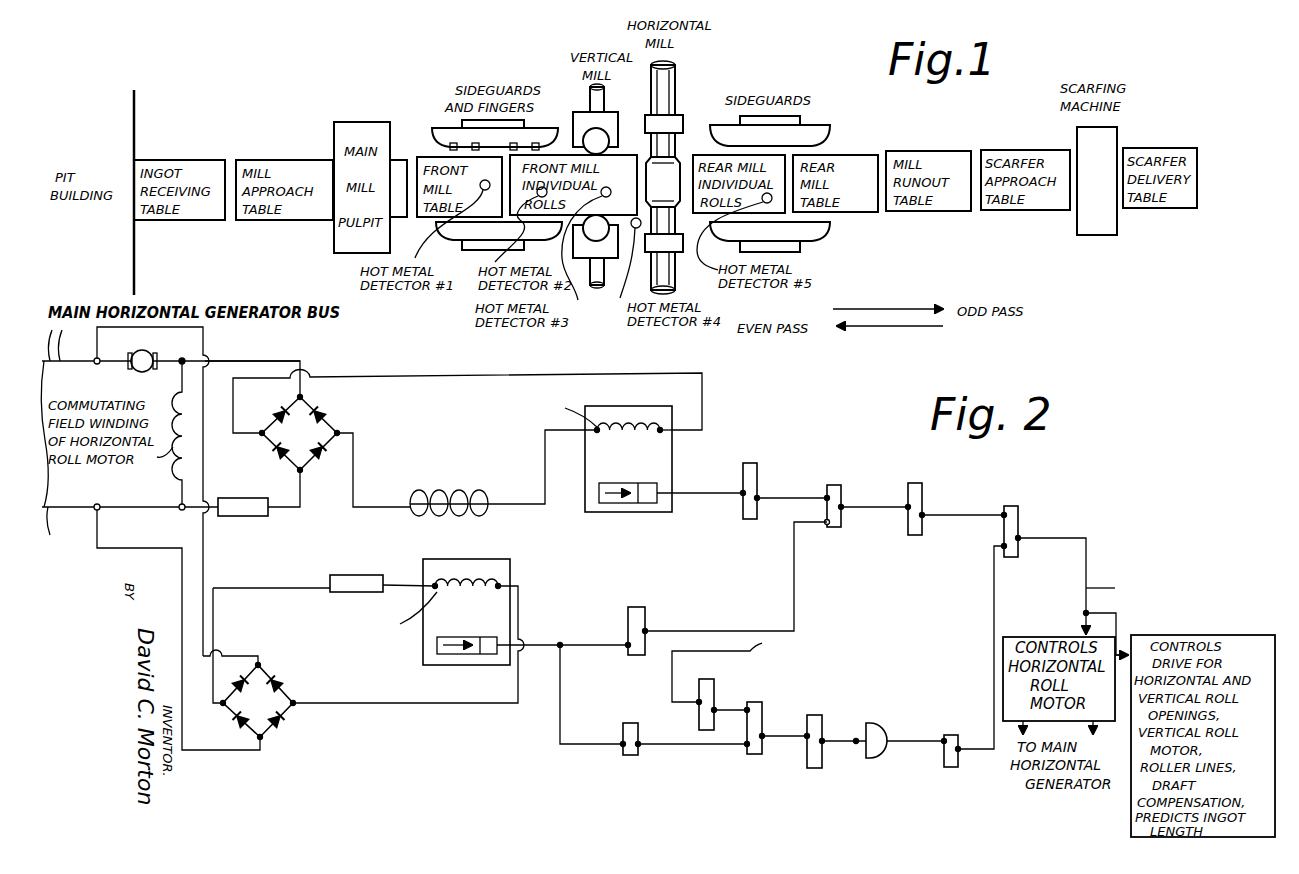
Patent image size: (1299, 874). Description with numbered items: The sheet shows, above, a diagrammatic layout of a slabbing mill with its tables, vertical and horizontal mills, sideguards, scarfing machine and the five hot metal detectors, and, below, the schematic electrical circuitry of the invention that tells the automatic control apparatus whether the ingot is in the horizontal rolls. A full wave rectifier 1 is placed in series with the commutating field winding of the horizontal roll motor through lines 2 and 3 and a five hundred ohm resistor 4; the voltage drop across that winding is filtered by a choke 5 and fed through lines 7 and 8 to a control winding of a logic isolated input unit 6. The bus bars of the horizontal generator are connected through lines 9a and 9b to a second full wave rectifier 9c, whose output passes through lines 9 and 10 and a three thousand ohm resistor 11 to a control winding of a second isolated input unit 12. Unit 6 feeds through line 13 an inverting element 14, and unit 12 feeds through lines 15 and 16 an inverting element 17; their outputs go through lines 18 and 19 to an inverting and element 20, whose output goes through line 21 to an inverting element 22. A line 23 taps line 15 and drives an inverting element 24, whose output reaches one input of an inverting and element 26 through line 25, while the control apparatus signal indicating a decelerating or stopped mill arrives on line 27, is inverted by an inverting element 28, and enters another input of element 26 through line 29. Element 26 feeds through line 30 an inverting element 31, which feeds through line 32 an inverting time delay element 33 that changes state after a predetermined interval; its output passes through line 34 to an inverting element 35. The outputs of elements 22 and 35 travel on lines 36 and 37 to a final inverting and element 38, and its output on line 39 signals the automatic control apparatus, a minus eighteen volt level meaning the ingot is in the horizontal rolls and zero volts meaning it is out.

The full wave rectifier 1 is at (330, 420).
The line 2 is at (235, 361).
The line 3 is at (203, 512).
The 500 ohm resistor 4 is at (236, 498).
The choke 5 is at (449, 493).
The logic isolated input unit 6 is at (672, 416).
The line 7 is at (414, 375).
The line 8 is at (355, 479).
The line 9 is at (305, 590).
The line 9a is at (100, 539).
The line 9b is at (205, 333).
The full wave rectifier 9c is at (268, 740).
The line 10 is at (518, 604).
The 3000 ohm resistor 11 is at (349, 575).
The logic isolated input unit 12 is at (494, 559).
The line 13 is at (692, 493).
The logic inverting element 14 is at (766, 447).
The line 15 is at (530, 645).
The line 16 is at (580, 645).
The logic inverting element 17 is at (636, 607).
The line 18 is at (782, 498).
The line 19 is at (752, 631).
The logic inverting and element 20 is at (847, 470).
The line 21 is at (866, 507).
The logic inverting element 22 is at (914, 496).
The line 23 is at (562, 698).
The logic inverting element 24 is at (628, 755).
The line 25 is at (690, 746).
The logic inverting and element 26 is at (752, 754).
The line 27 is at (674, 665).
The logic inverting element 28 is at (714, 690).
The line 29 is at (738, 716).
The line 30 is at (772, 736).
The logic inverting element 31 is at (826, 797).
The line 32 is at (840, 741).
The logic inverting time delay element 33 is at (910, 812).
The line 34 is at (912, 746).
The logic inverting element 35 is at (958, 762).
The line 36 is at (940, 515).
The line 37 is at (996, 578).
The logic inverting and element 38 is at (1001, 533).
The line 39 is at (1063, 538).